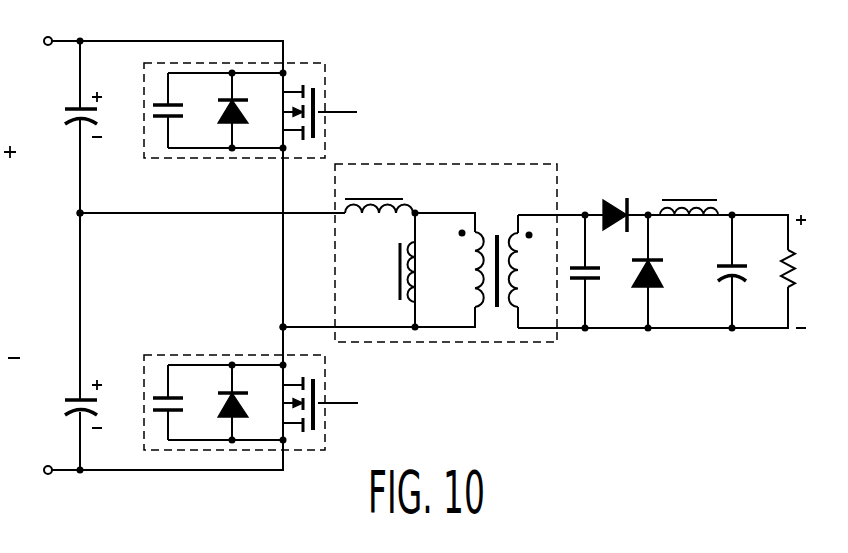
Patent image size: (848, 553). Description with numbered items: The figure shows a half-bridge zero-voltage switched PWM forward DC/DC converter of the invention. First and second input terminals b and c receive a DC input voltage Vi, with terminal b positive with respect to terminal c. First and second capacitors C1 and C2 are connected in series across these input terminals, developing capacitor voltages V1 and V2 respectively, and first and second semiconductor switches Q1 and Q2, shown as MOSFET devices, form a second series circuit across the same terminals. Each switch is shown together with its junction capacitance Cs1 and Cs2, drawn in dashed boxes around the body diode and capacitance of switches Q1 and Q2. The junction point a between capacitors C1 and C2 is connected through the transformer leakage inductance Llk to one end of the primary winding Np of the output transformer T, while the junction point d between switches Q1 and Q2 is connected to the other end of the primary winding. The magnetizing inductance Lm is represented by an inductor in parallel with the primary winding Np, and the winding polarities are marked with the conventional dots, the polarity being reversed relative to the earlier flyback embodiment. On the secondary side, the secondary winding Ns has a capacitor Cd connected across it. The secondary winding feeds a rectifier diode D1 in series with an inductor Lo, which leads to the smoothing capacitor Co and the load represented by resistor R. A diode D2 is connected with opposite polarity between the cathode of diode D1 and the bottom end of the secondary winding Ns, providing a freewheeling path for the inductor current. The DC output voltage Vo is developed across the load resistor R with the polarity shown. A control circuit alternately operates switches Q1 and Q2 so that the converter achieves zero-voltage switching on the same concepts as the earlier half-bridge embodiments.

The first input terminal b is at (39, 40).
The second input terminal c is at (39, 469).
The junction point between capacitors a is at (72, 229).
The junction point between switches d is at (276, 325).
The DC input voltage Vi is at (10, 252).
The second capacitor C2 is at (64, 118).
The capacitor voltage V2 is at (109, 114).
The first capacitor C1 is at (63, 406).
The capacitor voltage V1 is at (109, 404).
The junction capacitance Cs2 is at (234, 128).
The second semiconductor switch Q2 is at (320, 109).
The junction capacitance Cs1 is at (234, 387).
The first semiconductor switch Q1 is at (320, 400).
The output transformer T is at (435, 253).
The leakage inductance Llk is at (379, 191).
The magnetizing inductance Lm is at (390, 272).
The primary winding Np is at (471, 269).
The secondary winding Ns is at (529, 270).
The capacitor Cd is at (592, 290).
The rectifier diode D1 is at (615, 200).
The diode D2 is at (662, 274).
The inductor Lo is at (689, 193).
The smoothing capacitor Co is at (740, 291).
The load resistor R is at (780, 269).
The DC output voltage Vo is at (811, 271).